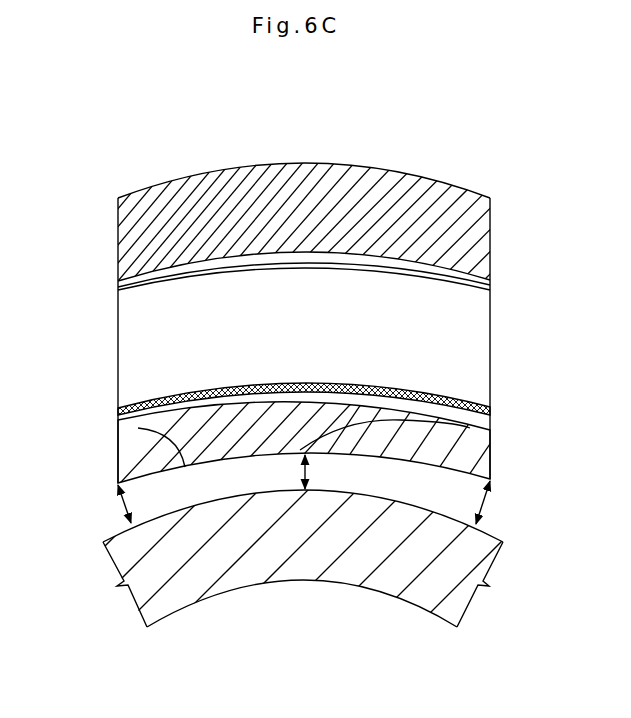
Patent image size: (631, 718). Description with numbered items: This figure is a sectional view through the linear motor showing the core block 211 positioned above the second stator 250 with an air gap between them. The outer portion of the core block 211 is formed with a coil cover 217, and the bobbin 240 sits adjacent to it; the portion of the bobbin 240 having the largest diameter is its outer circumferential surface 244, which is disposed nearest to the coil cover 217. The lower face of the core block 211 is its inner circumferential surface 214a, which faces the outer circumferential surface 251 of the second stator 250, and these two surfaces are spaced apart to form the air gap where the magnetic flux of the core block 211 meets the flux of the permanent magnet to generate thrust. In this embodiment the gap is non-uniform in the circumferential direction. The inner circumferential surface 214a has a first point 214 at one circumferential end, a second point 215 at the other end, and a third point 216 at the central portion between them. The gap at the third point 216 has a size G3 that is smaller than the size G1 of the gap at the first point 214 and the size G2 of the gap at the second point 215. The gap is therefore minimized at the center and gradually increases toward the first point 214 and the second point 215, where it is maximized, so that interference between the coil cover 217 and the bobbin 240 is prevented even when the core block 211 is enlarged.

The core block 211 is at (410, 192).
The coil cover 217 is at (300, 248).
The outer circumferential surface of the bobbin 244 is at (207, 267).
The bobbin 240 is at (463, 405).
The third point 216 is at (483, 438).
The inner circumferential surface 214a is at (138, 428).
The first point 214 is at (118, 483).
The second point 215 is at (490, 480).
The second stator 250 is at (388, 584).
The outer circumferential surface of the second stator 251 is at (235, 496).
The size of air gap at first point G1 is at (138, 504).
The size of air gap at second point G2 is at (493, 503).
The size of air gap at third point G3 is at (322, 472).